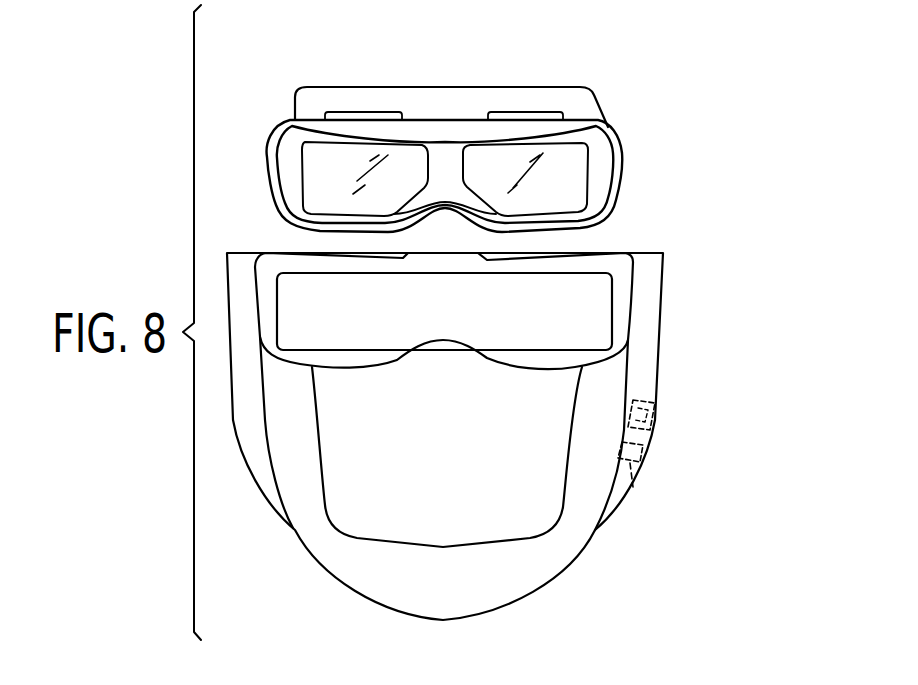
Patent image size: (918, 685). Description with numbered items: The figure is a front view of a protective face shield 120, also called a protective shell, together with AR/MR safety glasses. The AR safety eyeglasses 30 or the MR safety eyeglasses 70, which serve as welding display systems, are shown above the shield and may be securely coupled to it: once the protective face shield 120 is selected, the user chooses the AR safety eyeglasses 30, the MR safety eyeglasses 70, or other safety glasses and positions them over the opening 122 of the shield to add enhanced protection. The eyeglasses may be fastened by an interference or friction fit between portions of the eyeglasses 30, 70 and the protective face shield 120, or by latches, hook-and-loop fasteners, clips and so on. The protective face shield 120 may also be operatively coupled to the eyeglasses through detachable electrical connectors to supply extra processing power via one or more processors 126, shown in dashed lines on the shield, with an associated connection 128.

The AR safety eyeglasses 30 is at (445, 118).
The MR safety eyeglasses 70 is at (453, 68).
The protective face shield 120 is at (647, 267).
The opening 122 is at (593, 278).
The processors 126 is at (657, 427).
The wire 128 is at (633, 487).